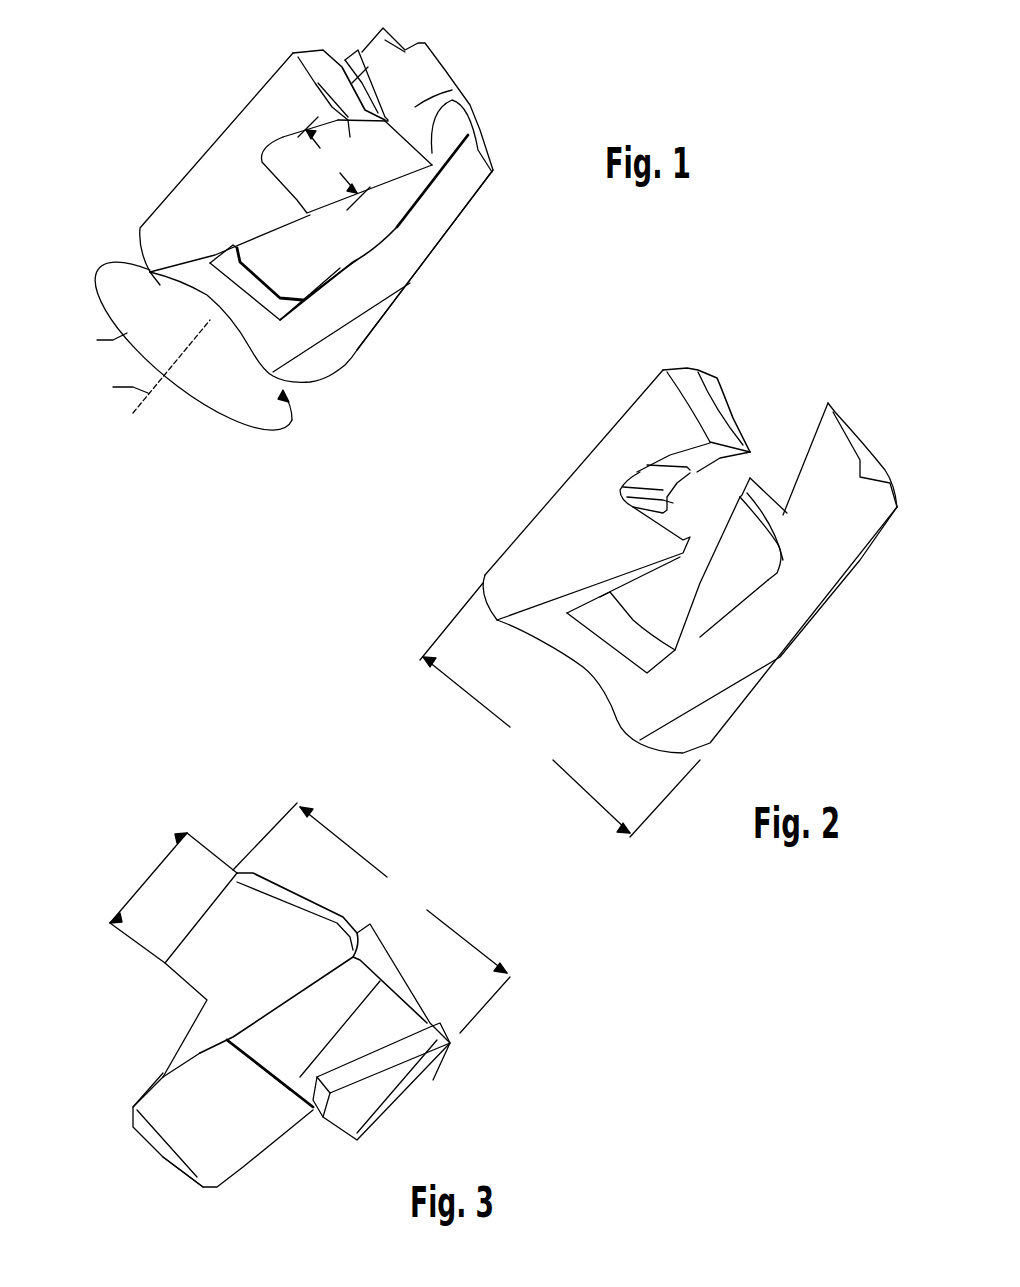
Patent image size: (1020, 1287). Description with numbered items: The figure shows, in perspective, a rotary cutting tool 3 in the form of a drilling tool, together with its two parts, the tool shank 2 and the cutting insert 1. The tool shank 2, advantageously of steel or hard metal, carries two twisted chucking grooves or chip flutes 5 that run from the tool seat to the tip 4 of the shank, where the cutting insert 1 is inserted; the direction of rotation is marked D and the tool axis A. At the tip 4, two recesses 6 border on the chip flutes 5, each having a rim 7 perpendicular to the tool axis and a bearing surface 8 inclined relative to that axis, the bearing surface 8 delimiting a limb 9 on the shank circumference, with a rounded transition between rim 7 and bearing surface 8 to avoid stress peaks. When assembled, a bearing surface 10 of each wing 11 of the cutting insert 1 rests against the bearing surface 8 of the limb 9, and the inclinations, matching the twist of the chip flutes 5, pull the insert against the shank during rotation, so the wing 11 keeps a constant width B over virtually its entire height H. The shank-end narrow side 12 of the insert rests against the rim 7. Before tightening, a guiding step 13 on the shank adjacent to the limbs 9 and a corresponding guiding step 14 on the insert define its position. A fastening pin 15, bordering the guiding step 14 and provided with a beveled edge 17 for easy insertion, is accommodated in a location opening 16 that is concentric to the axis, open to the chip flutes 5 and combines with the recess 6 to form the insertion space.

In FIG. 1, the cutting insert 1 is at (415, 107).
In FIG. 3, the cutting insert 1 is at (135, 1023).
In FIG. 1, the tool shank 2 is at (160, 235).
In FIG. 2, the tool shank 2 is at (477, 527).
In FIG. 1, the rotary cutting tool 3 is at (490, 233).
In FIG. 1, the tip of the shank 4 is at (463, 67).
In FIG. 2, the tip of the shank 4 is at (777, 403).
In FIG. 1, the chip flutes 5 is at (290, 275).
In FIG. 2, the chip flutes 5 is at (667, 693).
In FIG. 2, the recesses 6 is at (620, 492).
In FIG. 1, the rim 7 is at (273, 177).
In FIG. 2, the rim 7 is at (763, 503).
In FIG. 1, the bearing surface 8 is at (293, 130).
In FIG. 2, the bearing surface 8 is at (637, 472).
In FIG. 1, the limb 9 is at (475, 152).
In FIG. 2, the limb 9 is at (660, 415).
In FIG. 1, the bearing surface 10 is at (271, 153).
In FIG. 3, the bearing surface 10 is at (390, 1055).
In FIG. 1, the wing 11 is at (333, 97).
In FIG. 3, the wing 11 is at (230, 947).
In FIG. 3, the shank-end narrow side 12 is at (337, 1135).
In FIG. 2, the guiding step 13 is at (780, 543).
In FIG. 3, the guiding step 14 is at (273, 1077).
In FIG. 3, the fastening pin 15 is at (233, 1147).
In FIG. 2, the location opening 16 is at (667, 587).
In FIG. 3, the beveled edge 17 is at (160, 1150).